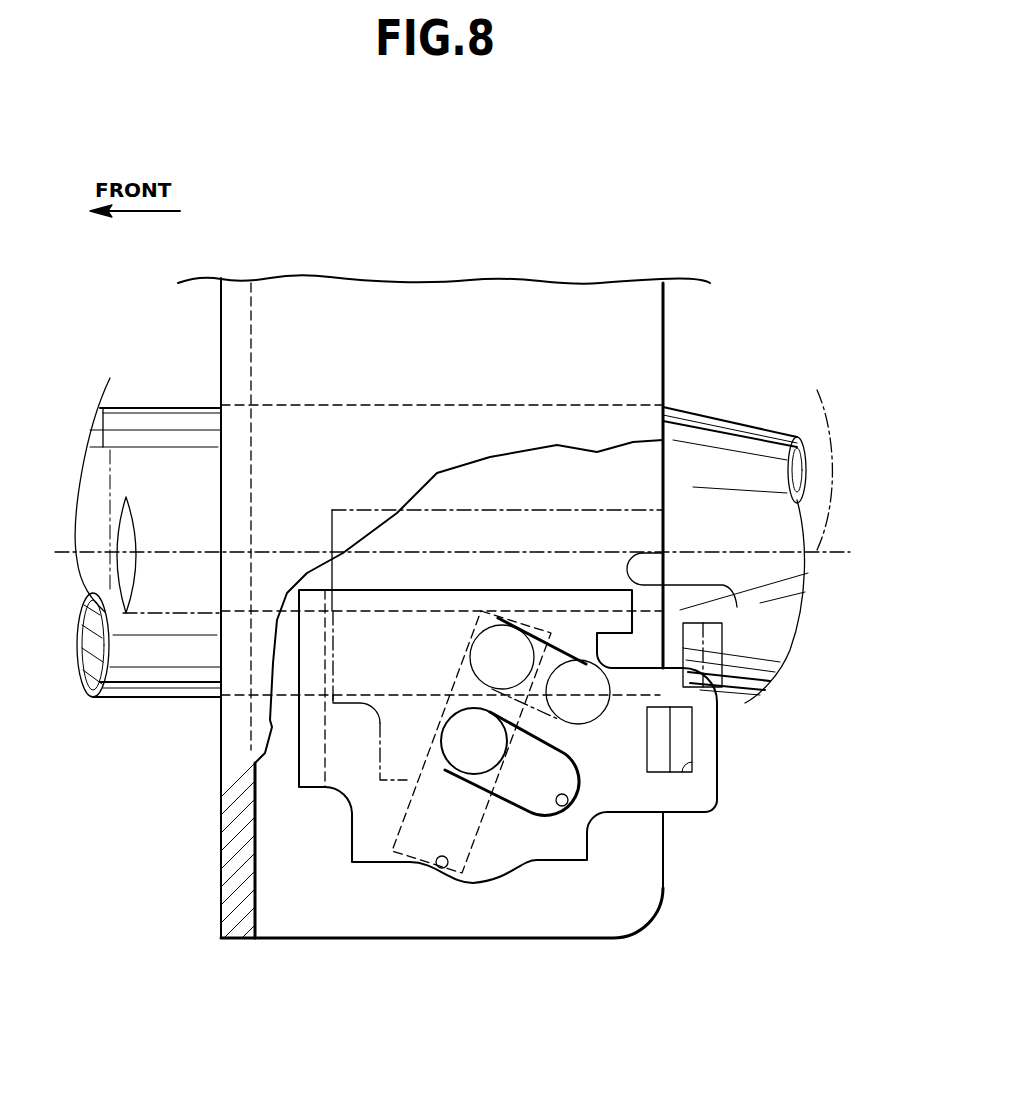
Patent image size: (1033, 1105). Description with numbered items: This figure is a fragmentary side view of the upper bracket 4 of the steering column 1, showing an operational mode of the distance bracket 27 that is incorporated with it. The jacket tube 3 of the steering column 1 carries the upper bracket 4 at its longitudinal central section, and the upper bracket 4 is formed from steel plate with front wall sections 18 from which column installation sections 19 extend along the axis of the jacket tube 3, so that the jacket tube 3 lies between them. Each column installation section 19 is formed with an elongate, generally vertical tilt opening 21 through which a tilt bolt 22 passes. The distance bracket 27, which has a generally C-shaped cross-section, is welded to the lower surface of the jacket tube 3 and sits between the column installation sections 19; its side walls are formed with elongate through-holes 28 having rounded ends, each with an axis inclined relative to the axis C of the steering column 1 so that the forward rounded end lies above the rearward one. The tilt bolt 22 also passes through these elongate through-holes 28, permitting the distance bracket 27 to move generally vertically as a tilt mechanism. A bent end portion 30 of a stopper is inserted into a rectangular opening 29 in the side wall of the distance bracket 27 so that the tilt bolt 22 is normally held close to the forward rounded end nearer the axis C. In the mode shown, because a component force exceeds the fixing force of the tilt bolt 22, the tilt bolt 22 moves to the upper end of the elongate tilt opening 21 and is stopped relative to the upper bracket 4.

The steering column 1 is at (790, 338).
The jacket tube 3 is at (707, 437).
The upper bracket 4 is at (527, 346).
The front wall section 18 is at (228, 870).
The column installation section 19 is at (571, 922).
The tilt opening 21 is at (446, 866).
The tilt bolt 22 is at (501, 637).
The distance bracket 27 is at (332, 527).
The elongate through-hole 28 is at (577, 660).
The rectangular opening 29 is at (745, 648).
The bent end portion 30 is at (722, 660).
The axis of the steering column C is at (843, 552).